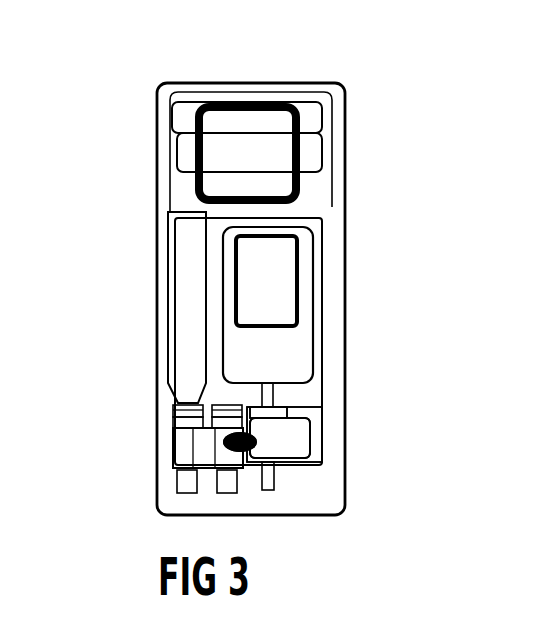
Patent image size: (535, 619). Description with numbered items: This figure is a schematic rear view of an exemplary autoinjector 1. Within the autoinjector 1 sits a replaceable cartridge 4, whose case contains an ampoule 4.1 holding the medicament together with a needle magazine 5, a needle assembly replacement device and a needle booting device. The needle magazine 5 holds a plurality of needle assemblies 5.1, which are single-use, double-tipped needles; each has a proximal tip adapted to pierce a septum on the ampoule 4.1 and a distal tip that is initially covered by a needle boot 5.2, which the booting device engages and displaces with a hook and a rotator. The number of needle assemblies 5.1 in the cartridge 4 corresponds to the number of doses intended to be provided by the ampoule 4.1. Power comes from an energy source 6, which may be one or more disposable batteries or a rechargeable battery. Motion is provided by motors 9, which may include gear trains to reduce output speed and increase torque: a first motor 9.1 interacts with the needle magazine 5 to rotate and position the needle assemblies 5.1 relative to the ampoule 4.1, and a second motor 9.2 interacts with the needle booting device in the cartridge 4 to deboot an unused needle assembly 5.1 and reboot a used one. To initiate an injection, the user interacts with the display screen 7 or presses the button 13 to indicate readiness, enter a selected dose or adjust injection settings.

The autoinjector 1 is at (197, 53).
The cartridge 4 is at (330, 356).
The ampoule 4.1 is at (197, 259).
The needle magazine 5 is at (162, 437).
The needle assembly 5.1 is at (185, 477).
The needle boot 5.2 is at (185, 477).
The energy source 6 is at (312, 113).
The display screen 7 is at (285, 270).
The motor 9 is at (287, 412).
The first motor 9.1 is at (298, 438).
The second motor 9.2 is at (287, 412).
The button 13 is at (281, 191).